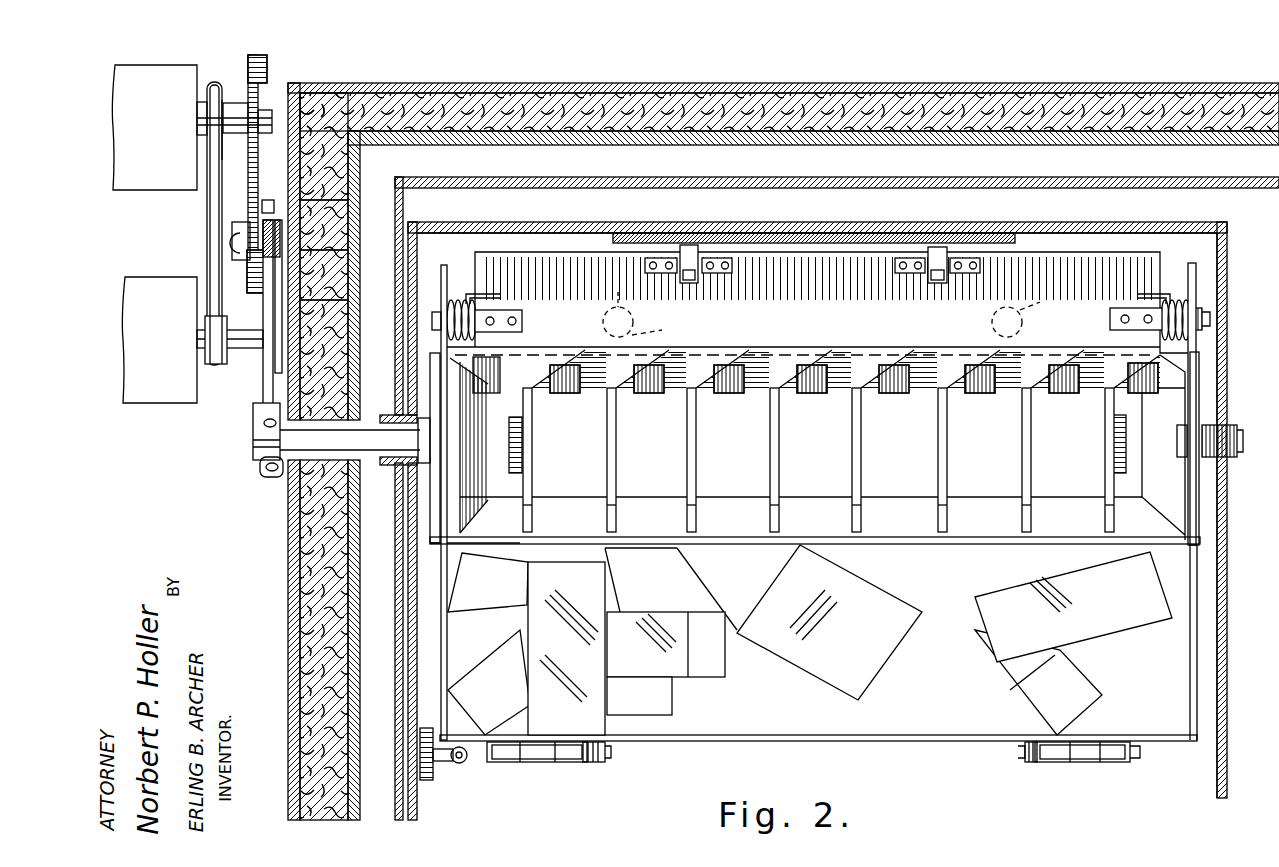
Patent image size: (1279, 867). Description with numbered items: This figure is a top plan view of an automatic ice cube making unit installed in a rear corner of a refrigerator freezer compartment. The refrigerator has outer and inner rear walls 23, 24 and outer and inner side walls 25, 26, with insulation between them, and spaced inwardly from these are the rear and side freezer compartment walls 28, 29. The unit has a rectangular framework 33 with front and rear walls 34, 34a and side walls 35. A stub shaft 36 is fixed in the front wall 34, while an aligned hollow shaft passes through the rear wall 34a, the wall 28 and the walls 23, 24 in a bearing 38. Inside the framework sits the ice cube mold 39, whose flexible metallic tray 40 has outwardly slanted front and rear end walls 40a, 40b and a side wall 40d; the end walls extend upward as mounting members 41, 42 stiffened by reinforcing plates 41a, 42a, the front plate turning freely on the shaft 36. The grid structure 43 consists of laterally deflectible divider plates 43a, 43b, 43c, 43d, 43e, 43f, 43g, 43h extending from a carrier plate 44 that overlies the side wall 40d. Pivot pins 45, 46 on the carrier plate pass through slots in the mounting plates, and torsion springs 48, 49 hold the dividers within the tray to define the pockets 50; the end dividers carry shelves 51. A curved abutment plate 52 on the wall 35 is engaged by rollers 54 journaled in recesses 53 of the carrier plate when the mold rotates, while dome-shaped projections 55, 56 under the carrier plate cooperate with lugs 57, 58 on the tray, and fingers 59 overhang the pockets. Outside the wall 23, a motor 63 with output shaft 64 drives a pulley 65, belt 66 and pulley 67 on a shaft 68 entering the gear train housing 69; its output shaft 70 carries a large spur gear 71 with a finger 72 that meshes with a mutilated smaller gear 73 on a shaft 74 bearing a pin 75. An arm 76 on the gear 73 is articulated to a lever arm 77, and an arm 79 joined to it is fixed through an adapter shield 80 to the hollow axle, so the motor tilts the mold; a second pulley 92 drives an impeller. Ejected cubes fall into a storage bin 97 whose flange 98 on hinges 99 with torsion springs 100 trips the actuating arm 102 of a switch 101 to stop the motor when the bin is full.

The outer rear wall 23 is at (290, 616).
The inner rear wall 24 is at (348, 667).
The outer side wall 25 is at (796, 128).
The inner side wall 26 is at (705, 130).
The rear freezer compartment wall 28 is at (396, 665).
The side freezer compartment wall 29 is at (795, 178).
The rectangular framework 33 is at (1227, 226).
The front framework wall 34 is at (1228, 362).
The rear framework wall 34a is at (412, 562).
The side wall of framework 35 is at (1088, 222).
The stub shaft 36 is at (1230, 433).
The bearing 38 is at (376, 420).
The ice cube mold 39 is at (1090, 556).
The tray 40 is at (916, 545).
The front end wall 40a is at (1175, 485).
The rear end wall 40b is at (470, 500).
The side wall of tray 40d is at (852, 347).
The front mounting member 41 is at (1196, 273).
The front reinforcing plate member 41a is at (1199, 400).
The rear mounting member 42 is at (432, 486).
The rear reinforcing plate member 42a is at (435, 514).
The grid structure 43 is at (1150, 255).
The divider plate 43a is at (1105, 481).
The divider plate 43b is at (1022, 477).
The divider plate 43c is at (938, 477).
The divider plate 43d is at (861, 462).
The divider plate 43e is at (779, 484).
The divider plate 43f is at (696, 485).
The divider plate 43g is at (616, 473).
The divider plate 43h is at (532, 486).
The carrier plate 44 is at (838, 252).
The pivot pin 45 is at (1204, 318).
The pivot pin 46 is at (440, 290).
The torsion spring 48 is at (1168, 300).
The torsion spring 49 is at (461, 292).
The pocket 50 is at (726, 472).
The lug or shelf 51 is at (522, 430).
The abutment plate 52 is at (774, 232).
The recess 53 is at (698, 283).
The roller 54 is at (702, 277).
The dome-shaped projection 55 is at (1048, 299).
The dome-shaped projection 56 is at (610, 301).
The lug or arm 57 is at (992, 322).
The lug or arm 58 is at (661, 324).
The finger 59 is at (646, 395).
The electric motor 63 is at (183, 403).
The output shaft 64 is at (243, 335).
The pulley 65 is at (227, 364).
The drive belt 66 is at (207, 259).
The pulley 67 is at (223, 158).
The shaft 68 is at (197, 124).
The gear train housing 69 is at (173, 183).
The output shaft 70 is at (197, 103).
The spur gear 71 is at (248, 97).
The finger 72 is at (267, 69).
The spur gear 73 is at (300, 276).
The shaft 74 is at (306, 236).
The pin 75 is at (270, 200).
The arm 76 is at (247, 228).
The lever arm 77 is at (232, 232).
The arm 79 is at (342, 290).
The adapter shield 80 is at (253, 440).
The pulley 92 is at (285, 318).
The storage bin 97 is at (1175, 675).
The flange 98 is at (857, 741).
The hinge 99 is at (546, 762).
The torsion spring 100 is at (592, 762).
The switch 101 is at (433, 780).
The actuating arm 102 is at (457, 764).